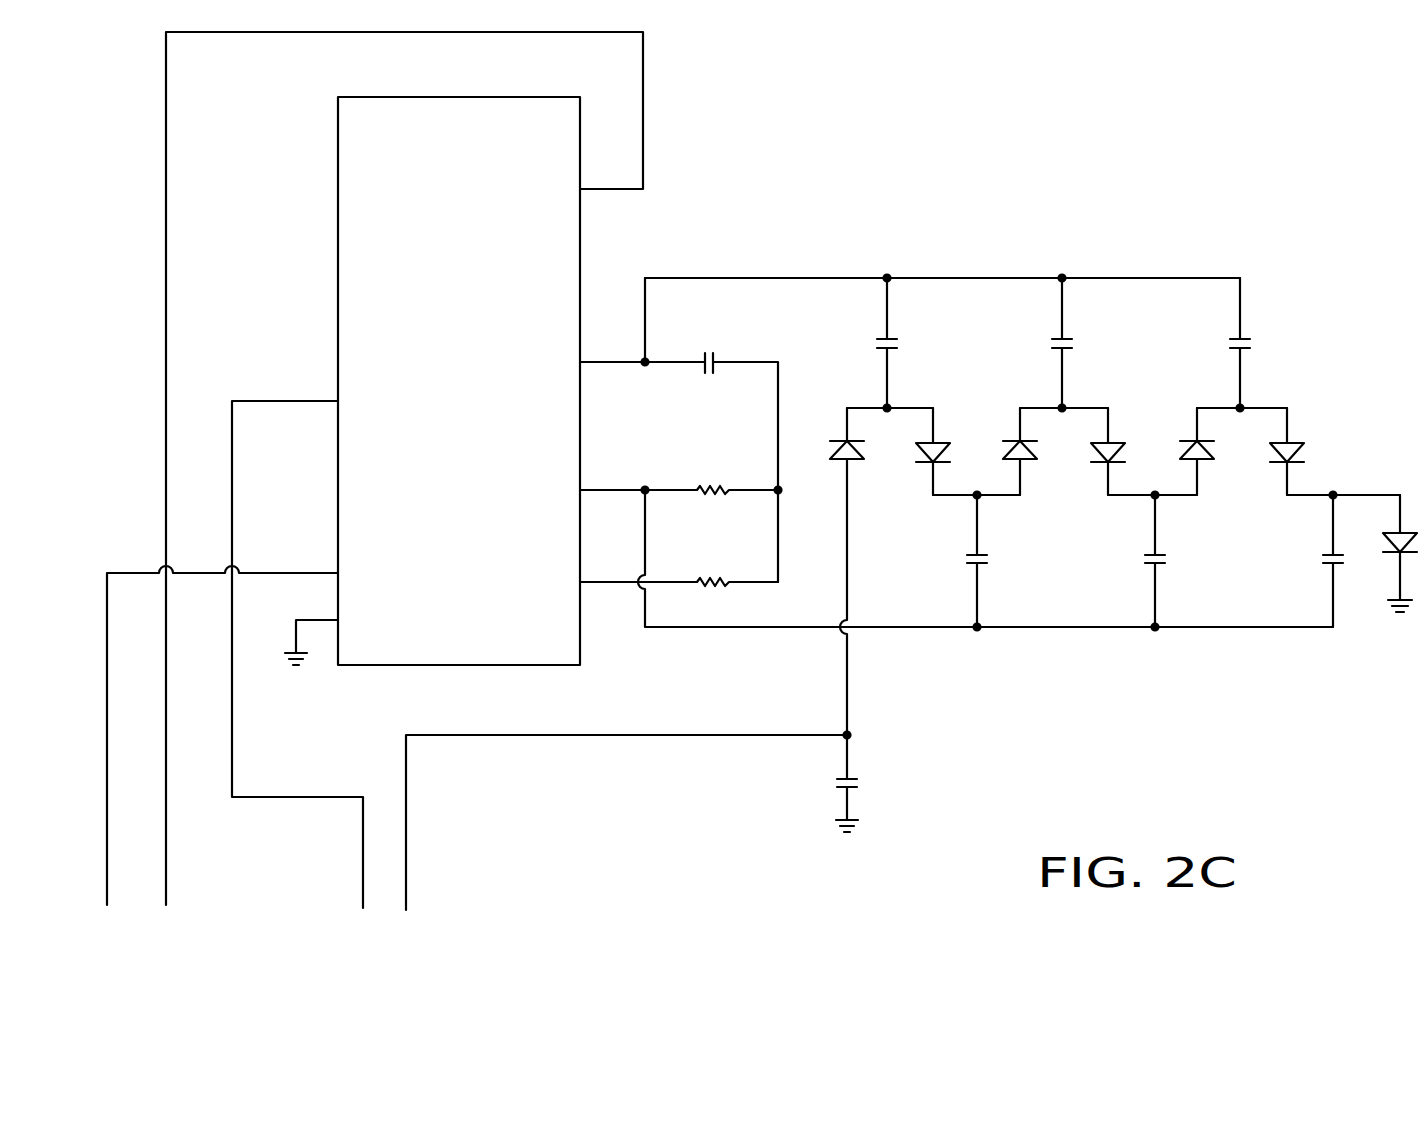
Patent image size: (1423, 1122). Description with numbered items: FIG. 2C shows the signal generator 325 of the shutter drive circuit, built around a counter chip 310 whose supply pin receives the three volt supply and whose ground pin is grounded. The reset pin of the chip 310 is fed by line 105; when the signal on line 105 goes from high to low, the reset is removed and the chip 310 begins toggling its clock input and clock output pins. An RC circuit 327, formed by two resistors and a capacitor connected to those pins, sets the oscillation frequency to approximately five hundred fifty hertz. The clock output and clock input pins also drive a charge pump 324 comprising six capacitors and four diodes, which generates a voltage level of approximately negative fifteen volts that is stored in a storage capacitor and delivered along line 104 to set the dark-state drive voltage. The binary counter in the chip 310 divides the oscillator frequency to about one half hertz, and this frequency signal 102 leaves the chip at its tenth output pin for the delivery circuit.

The frequency signal 102 is at (363, 838).
The voltage signal 104 is at (538, 735).
The line 105 is at (143, 573).
The 4060 chip 310 is at (537, 655).
The charge pump 324 is at (963, 278).
The signal generator 325 is at (699, 652).
The RC circuit 327 is at (747, 362).